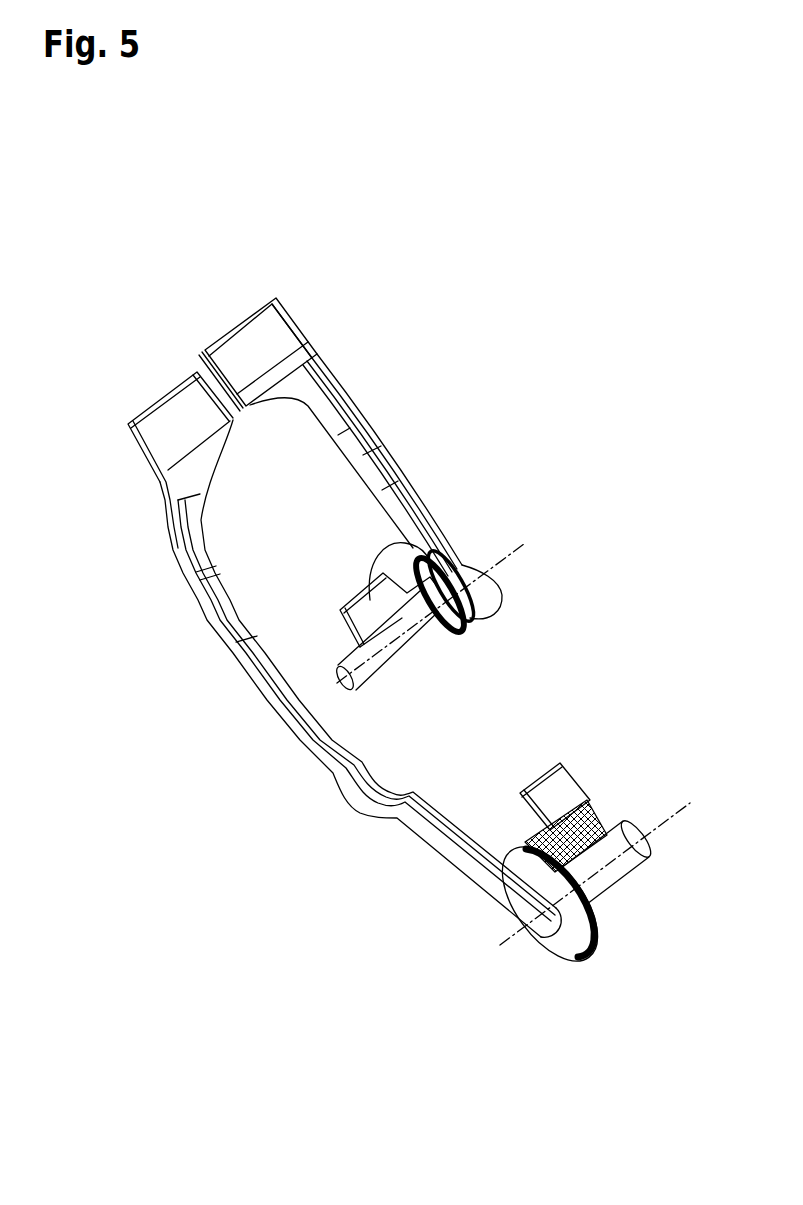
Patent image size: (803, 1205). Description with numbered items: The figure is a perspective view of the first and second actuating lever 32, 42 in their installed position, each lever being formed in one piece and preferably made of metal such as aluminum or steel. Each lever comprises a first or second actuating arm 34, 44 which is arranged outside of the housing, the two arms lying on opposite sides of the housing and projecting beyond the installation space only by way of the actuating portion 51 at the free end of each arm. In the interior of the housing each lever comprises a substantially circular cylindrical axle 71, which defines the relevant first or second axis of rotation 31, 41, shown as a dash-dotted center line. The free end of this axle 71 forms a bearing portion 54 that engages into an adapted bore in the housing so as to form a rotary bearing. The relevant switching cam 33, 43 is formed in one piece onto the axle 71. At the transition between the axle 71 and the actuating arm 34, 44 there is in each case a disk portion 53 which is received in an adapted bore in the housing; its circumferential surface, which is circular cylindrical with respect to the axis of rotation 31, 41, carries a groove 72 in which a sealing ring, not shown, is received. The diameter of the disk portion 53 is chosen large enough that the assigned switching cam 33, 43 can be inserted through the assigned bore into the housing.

The actuating portion 51 is at (247, 336).
The first actuating lever 32 is at (376, 461).
The first actuating arm 34 is at (381, 462).
The second actuating lever 42 is at (351, 678).
The second actuating arm 44 is at (229, 637).
The first switching cam 33 is at (377, 606).
The first axis of rotation 31 is at (523, 543).
The second axis of rotation 41 is at (681, 808).
The second switching cam 43 is at (568, 787).
The disk portion 53 is at (487, 610).
The groove 72 is at (460, 641).
The axle 71 is at (400, 641).
The bearing portion 54 is at (357, 681).